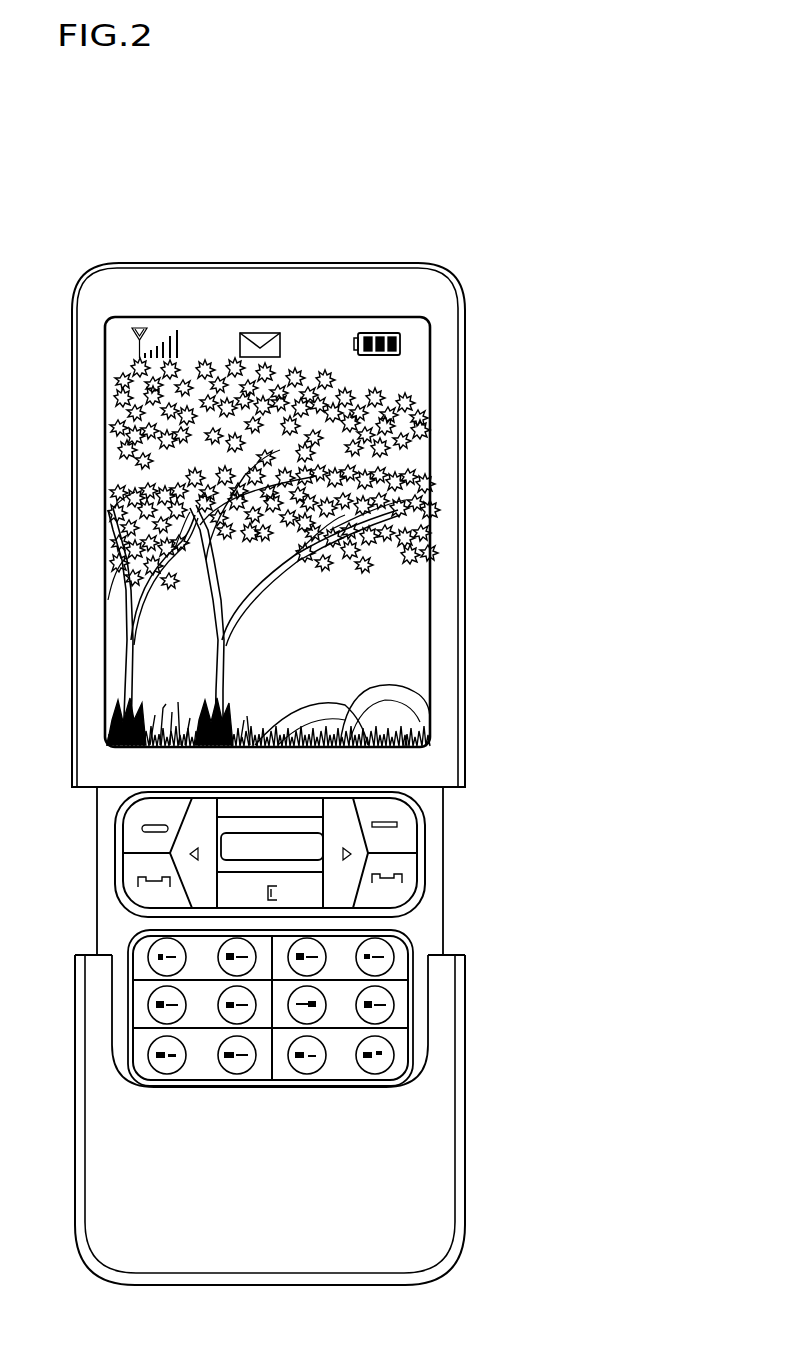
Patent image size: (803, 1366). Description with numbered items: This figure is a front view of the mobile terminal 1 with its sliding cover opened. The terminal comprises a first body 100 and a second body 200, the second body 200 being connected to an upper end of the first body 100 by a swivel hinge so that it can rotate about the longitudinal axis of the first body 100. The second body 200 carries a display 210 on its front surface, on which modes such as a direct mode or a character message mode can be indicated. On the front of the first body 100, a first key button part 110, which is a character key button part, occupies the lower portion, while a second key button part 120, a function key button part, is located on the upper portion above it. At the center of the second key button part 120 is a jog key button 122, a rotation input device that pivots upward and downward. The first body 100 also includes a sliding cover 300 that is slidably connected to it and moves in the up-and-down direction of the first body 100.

The mobile terminal 1 is at (383, 207).
The second body 200 is at (465, 415).
The display 210 is at (430, 605).
The first body 100 is at (428, 921).
The second key button part 120 is at (425, 849).
The jog key button 122 is at (288, 843).
The first key button part 110 is at (413, 1000).
The sliding cover 300 is at (467, 1185).